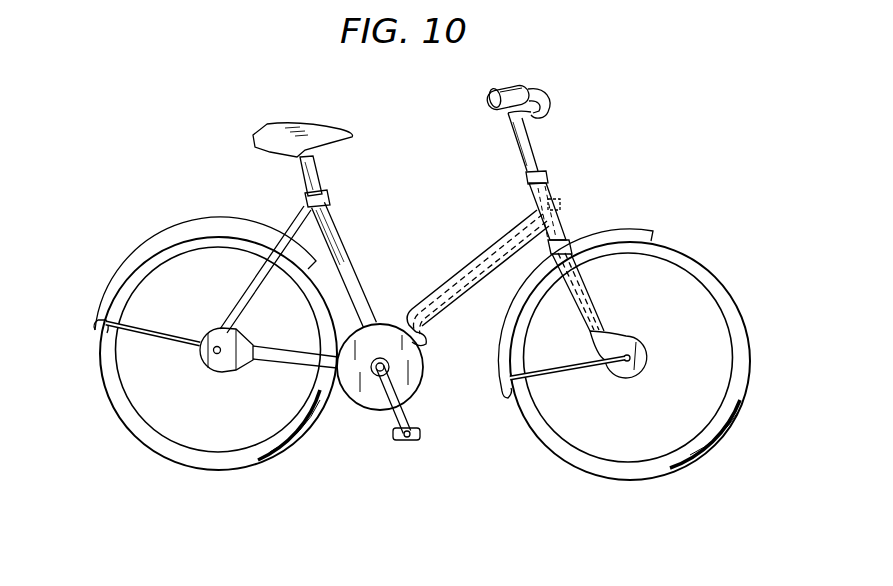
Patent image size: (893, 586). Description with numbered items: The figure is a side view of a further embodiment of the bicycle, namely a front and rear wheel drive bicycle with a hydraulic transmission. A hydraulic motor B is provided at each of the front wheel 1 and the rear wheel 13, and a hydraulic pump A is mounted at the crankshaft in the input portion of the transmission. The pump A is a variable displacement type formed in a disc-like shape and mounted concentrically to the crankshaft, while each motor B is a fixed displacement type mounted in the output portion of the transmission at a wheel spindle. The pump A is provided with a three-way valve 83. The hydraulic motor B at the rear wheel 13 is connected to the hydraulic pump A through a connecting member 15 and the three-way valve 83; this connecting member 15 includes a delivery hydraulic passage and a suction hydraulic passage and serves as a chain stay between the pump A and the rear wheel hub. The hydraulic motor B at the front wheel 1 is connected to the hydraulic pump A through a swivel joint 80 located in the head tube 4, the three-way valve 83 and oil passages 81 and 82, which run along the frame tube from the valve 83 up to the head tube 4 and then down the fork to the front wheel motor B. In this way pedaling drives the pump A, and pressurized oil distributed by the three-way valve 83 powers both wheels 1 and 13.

The front wheel 1 is at (751, 390).
The head tube 4 is at (547, 190).
The rear wheel 13 is at (100, 384).
The connecting member 15 is at (278, 367).
The swivel joint 80 is at (555, 207).
The oil passage 81 is at (490, 245).
The oil passage 82 is at (482, 278).
The three-way valve 83 is at (430, 342).
The hydraulic pump A is at (353, 410).
The hydraulic motor B is at (212, 368).